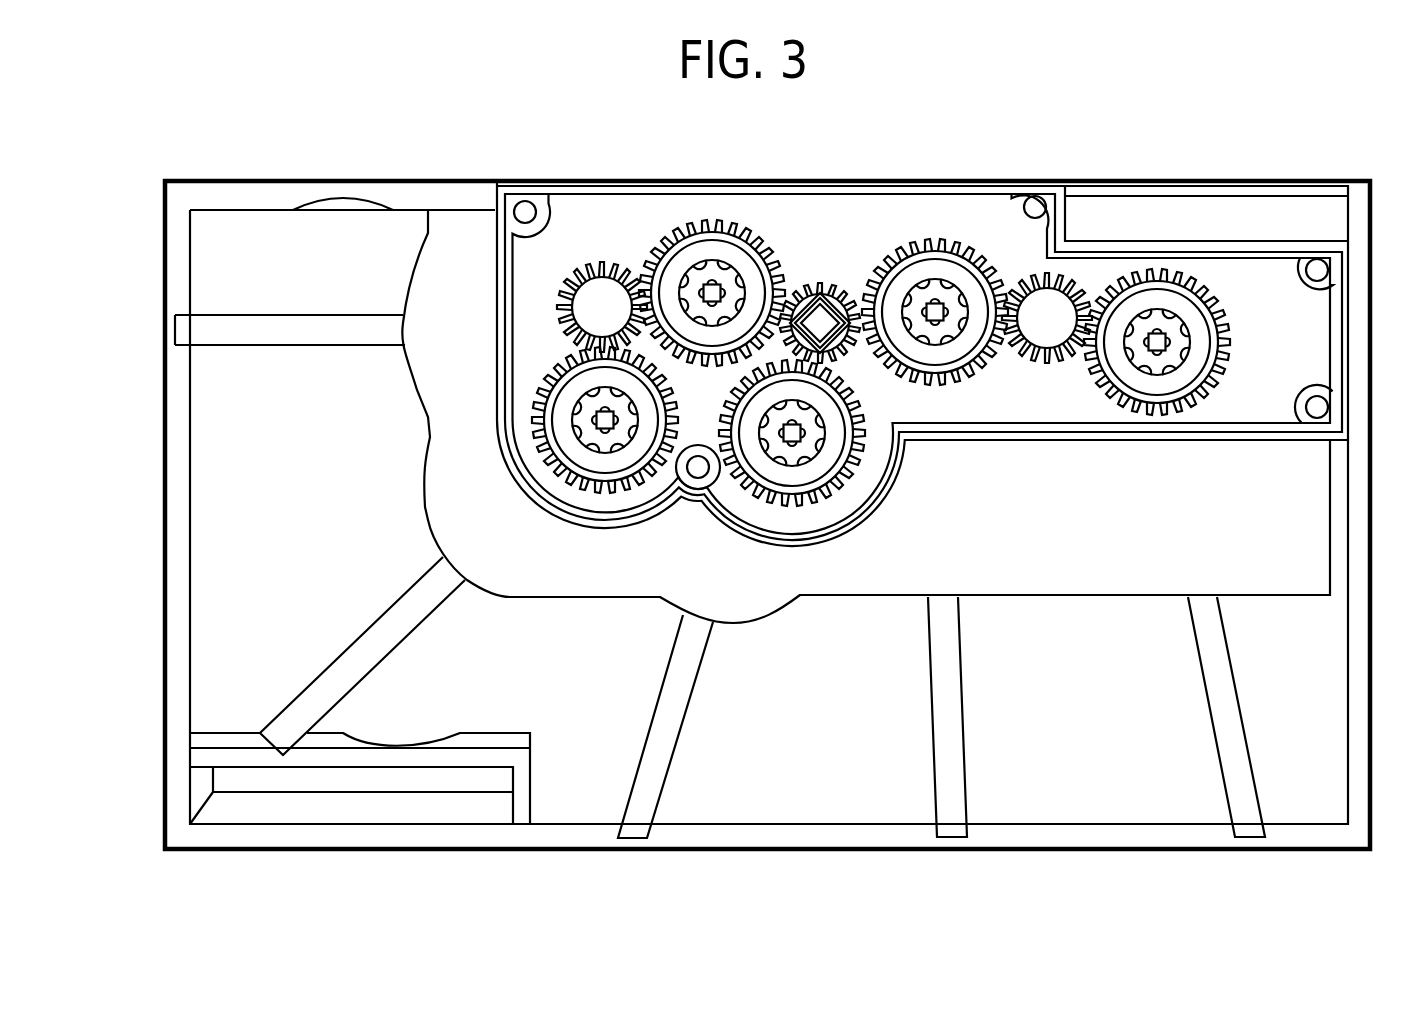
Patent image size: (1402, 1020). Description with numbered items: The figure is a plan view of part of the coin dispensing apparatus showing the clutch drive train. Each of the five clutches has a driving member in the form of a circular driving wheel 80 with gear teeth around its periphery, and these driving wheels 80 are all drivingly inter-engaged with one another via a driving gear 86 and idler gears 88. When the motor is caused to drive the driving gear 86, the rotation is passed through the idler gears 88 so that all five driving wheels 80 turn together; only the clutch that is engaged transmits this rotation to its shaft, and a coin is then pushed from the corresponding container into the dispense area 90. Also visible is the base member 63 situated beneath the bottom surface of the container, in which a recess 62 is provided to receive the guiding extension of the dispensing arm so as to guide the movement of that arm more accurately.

The recess 62 is at (313, 332).
The base member 63 is at (208, 416).
The driving wheel 80 is at (709, 250).
The driving gear 86 is at (586, 273).
The idler gear 88 is at (816, 290).
The dispense area 90 is at (1187, 522).